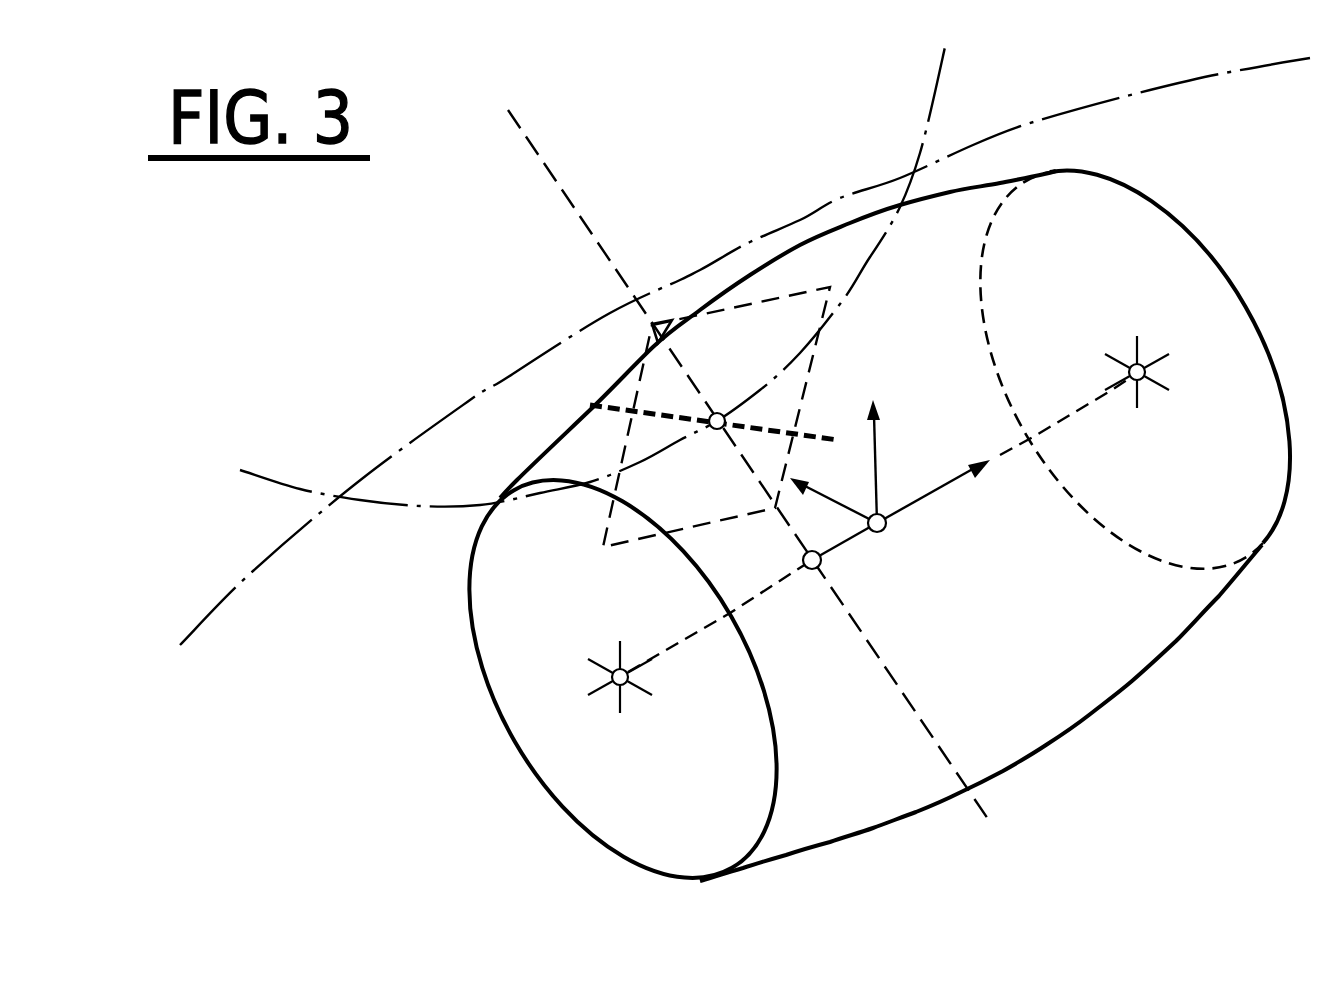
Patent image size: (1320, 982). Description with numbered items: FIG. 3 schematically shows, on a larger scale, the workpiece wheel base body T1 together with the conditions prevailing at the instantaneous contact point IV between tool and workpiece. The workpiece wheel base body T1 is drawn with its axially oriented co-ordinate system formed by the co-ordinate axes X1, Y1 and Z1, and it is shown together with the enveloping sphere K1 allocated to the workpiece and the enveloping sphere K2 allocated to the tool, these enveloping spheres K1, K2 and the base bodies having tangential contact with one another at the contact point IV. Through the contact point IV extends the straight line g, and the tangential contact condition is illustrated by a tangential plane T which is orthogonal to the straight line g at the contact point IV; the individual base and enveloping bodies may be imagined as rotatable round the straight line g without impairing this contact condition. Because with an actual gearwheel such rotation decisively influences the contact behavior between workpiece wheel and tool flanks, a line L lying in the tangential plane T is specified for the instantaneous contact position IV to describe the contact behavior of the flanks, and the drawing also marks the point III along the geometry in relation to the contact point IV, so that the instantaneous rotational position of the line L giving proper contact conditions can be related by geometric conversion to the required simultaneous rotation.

The workpiece wheel base body T1 is at (1041, 662).
The enveloping sphere K1 is at (261, 657).
The enveloping sphere K2 is at (592, 277).
The straight line g is at (766, 475).
The tangential plane T is at (716, 417).
The line L is at (710, 426).
The contact point IV is at (706, 446).
The point III is at (827, 579).
The co-ordinate axis X1 is at (821, 533).
The co-ordinate axis Y1 is at (908, 384).
The co-ordinate axis Z1 is at (1013, 495).